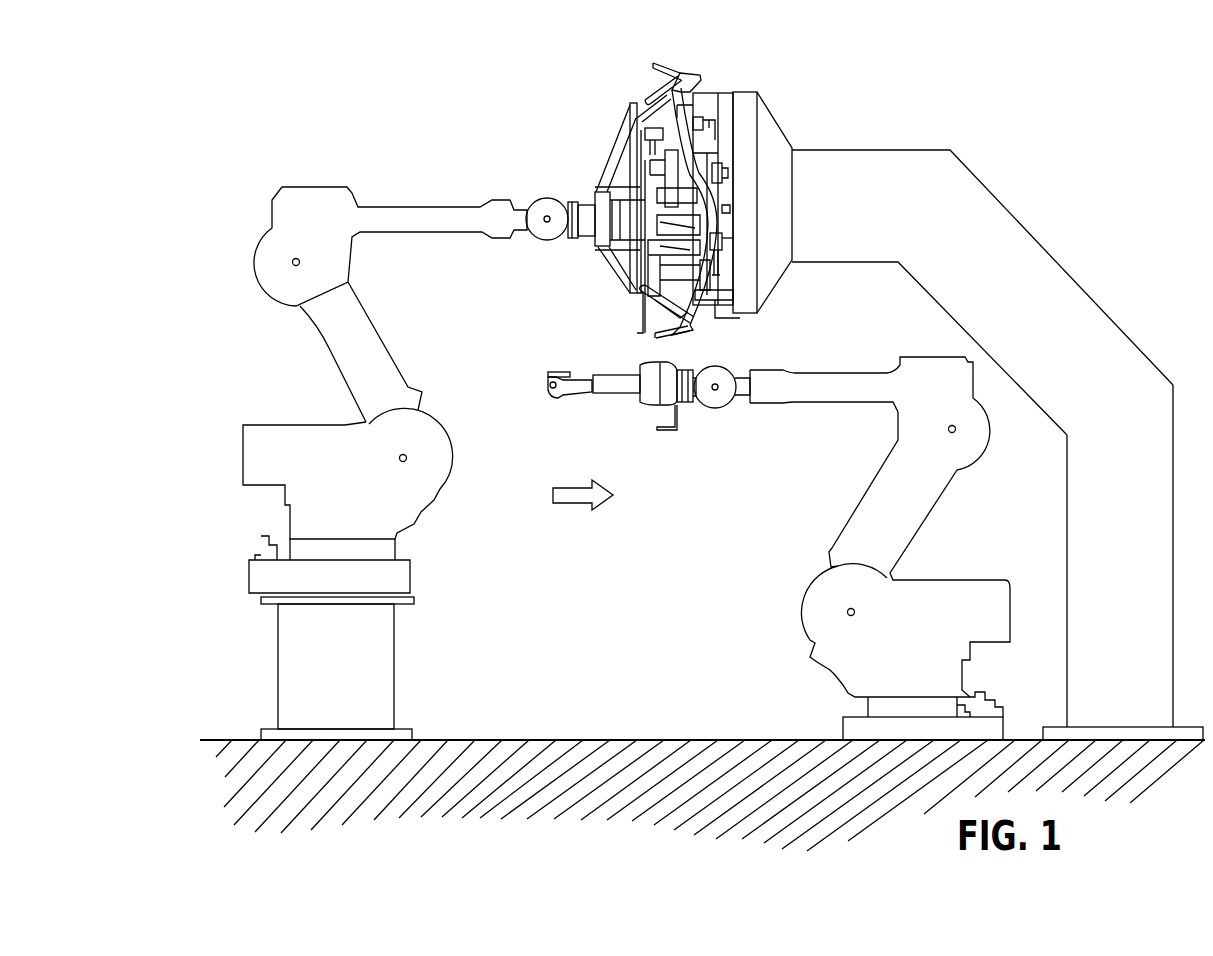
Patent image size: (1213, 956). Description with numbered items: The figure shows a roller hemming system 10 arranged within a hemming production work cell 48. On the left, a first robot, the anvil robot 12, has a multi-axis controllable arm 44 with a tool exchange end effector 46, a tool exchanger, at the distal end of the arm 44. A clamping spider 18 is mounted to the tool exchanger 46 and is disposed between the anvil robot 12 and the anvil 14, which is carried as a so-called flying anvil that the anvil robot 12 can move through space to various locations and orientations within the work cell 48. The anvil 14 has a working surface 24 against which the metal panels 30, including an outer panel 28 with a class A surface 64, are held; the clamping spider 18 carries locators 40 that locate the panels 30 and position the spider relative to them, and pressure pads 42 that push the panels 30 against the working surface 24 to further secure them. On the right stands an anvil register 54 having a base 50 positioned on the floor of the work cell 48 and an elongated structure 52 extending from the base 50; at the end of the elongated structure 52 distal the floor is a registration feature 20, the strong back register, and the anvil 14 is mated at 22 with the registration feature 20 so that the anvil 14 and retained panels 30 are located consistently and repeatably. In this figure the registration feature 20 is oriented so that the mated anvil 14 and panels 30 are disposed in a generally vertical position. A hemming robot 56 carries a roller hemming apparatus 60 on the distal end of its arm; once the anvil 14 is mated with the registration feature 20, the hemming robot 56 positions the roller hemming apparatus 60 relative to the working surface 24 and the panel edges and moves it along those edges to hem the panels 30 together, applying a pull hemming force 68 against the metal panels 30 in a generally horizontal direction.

The roller hemming system 10 is at (237, 141).
The anvil robot 12 is at (323, 350).
The anvil 14 is at (716, 96).
The clamping spider 18 is at (611, 165).
The registration feature 20 is at (720, 205).
The mating location 22 is at (733, 187).
The working surface 24 is at (672, 112).
The outer panel 28 is at (710, 268).
The metal panels 30 is at (647, 128).
The locators 40 is at (678, 222).
The pressure pads 42 is at (655, 303).
The multi-axis controllable arm 44 is at (455, 207).
The tool exchange end effector 46 is at (573, 245).
The hemming production work cell 48 is at (1117, 259).
The base 50 is at (1057, 724).
The elongated structure 52 is at (988, 187).
The anvil register 54 is at (727, 217).
The hemming robot 56 is at (852, 522).
The roller hemming apparatus 60 is at (548, 398).
The class "A" surface 64 is at (687, 303).
The pull hemming force 68 is at (568, 503).